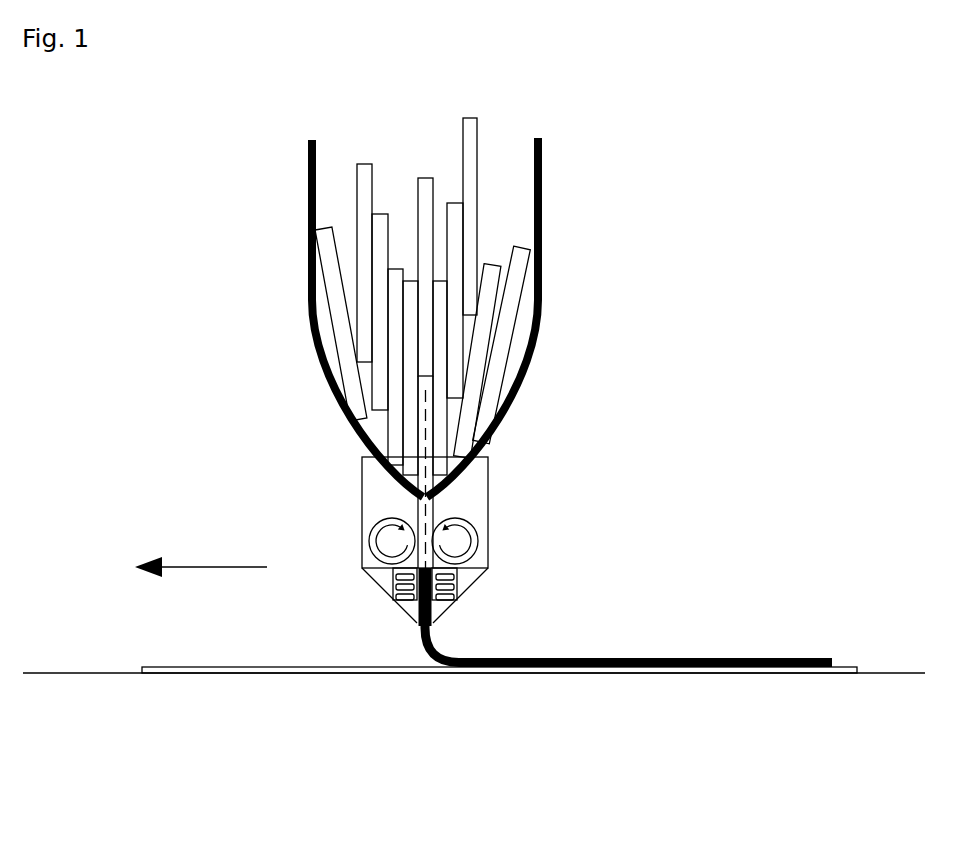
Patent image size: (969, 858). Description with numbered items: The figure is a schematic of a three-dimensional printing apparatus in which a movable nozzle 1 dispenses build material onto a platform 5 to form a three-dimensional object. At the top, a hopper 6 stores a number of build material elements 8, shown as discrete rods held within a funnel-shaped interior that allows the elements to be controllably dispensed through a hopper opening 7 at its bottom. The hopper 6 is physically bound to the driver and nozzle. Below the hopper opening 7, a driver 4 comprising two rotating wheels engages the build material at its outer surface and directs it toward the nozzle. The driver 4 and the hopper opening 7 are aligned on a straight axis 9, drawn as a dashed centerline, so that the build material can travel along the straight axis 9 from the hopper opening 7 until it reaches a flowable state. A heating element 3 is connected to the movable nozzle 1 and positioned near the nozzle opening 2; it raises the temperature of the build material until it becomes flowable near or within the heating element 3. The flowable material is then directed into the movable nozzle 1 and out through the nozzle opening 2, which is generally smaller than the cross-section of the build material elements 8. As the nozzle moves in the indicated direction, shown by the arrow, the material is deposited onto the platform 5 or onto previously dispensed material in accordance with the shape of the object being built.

The movable nozzle 1 is at (417, 625).
The nozzle opening 2 is at (436, 633).
The heating element 3 is at (452, 588).
The driver 4 is at (441, 538).
The platform 5 is at (474, 694).
The hopper 6 is at (538, 195).
The hopper opening 7 is at (433, 496).
The build material elements 8 is at (472, 139).
The straight axis 9 is at (423, 499).